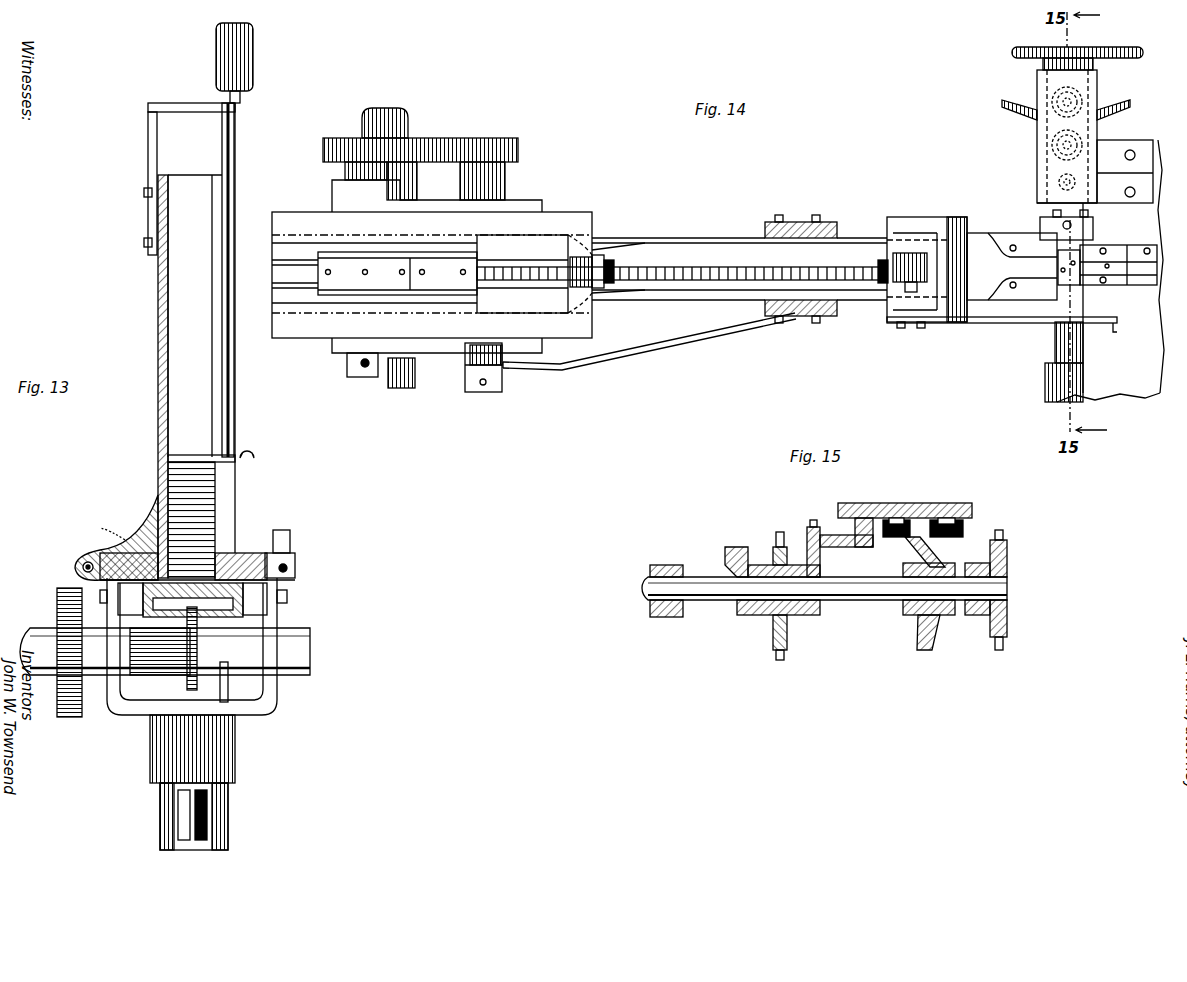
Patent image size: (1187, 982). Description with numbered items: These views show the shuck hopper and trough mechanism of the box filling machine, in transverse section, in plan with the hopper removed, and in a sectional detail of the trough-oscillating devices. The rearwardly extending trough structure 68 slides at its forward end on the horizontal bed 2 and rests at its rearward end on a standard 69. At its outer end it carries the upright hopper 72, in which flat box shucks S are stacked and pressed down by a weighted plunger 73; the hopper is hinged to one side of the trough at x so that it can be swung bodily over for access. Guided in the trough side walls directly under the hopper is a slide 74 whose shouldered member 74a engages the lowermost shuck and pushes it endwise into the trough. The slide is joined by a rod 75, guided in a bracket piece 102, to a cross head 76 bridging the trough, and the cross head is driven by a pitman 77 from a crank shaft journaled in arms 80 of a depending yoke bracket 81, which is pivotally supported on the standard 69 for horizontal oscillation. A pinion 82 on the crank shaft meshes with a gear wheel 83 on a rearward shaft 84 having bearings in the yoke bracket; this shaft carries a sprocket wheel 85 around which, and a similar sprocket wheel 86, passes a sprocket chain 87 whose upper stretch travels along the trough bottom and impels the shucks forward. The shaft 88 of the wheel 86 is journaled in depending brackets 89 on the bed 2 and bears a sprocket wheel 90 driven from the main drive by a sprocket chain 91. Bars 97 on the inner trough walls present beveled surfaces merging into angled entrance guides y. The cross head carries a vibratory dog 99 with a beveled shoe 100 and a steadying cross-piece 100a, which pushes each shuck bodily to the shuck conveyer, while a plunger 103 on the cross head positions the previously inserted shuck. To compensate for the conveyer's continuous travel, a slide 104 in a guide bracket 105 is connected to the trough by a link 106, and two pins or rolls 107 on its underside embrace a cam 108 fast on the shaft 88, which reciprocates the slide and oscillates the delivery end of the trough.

In FIG. 14, the bed 2 is at (1147, 378).
In FIG. 13, the trough structure 68 is at (173, 603).
In FIG. 14, the trough structure 68 is at (523, 197).
In FIG. 15, the trough structure 68 is at (742, 545).
In FIG. 13, the standard 69 is at (227, 820).
In FIG. 13, the hopper 72 is at (158, 287).
In FIG. 13, the weighted plunger 73 is at (190, 455).
In FIG. 13, the slide 74 is at (217, 577).
In FIG. 14, the slide 74 is at (303, 227).
In FIG. 13, the shouldered member 74a is at (200, 577).
In FIG. 14, the shouldered member 74a is at (360, 290).
In FIG. 14, the rod 75 is at (625, 268).
In FIG. 14, the cross head 76 is at (897, 312).
In FIG. 14, the pitman 77 is at (663, 347).
In FIG. 13, the arms 80 is at (227, 682).
In FIG. 13, the yoke bracket 81 is at (277, 622).
In FIG. 14, the pinion 82 is at (518, 148).
In FIG. 13, the gear wheel 83 is at (60, 600).
In FIG. 14, the gear wheel 83 is at (345, 140).
In FIG. 13, the rearward shaft 84 is at (310, 643).
In FIG. 13, the sprocket wheel 85 is at (190, 677).
In FIG. 15, the sprocket wheel 86 is at (788, 630).
In FIG. 14, the sprocket chain 87 is at (732, 268).
In FIG. 14, the shaft 88 is at (1060, 340).
In FIG. 15, the shaft 88 is at (715, 600).
In FIG. 14, the depending brackets 89 is at (1047, 397).
In FIG. 15, the depending brackets 89 is at (822, 610).
In FIG. 14, the sprocket wheel 90 is at (1103, 47).
In FIG. 15, the sprocket wheel 90 is at (1005, 548).
In FIG. 14, the sprocket chain 91 is at (1013, 52).
In FIG. 14, the bars 97 is at (712, 250).
In FIG. 14, the vibratory dog 99 is at (1033, 265).
In FIG. 14, the beveled shoe 100 is at (1107, 278).
In FIG. 14, the cross-piece 100a is at (1073, 268).
In FIG. 14, the bracket piece 102 is at (798, 317).
In FIG. 14, the plunger 103 is at (977, 323).
In FIG. 14, the slide 104 is at (1043, 135).
In FIG. 15, the slide 104 is at (850, 507).
In FIG. 14, the guide bracket 105 is at (1097, 88).
In FIG. 15, the guide bracket 105 is at (938, 503).
In FIG. 14, the link 106 is at (1060, 210).
In FIG. 15, the link 106 is at (840, 533).
In FIG. 14, the pins or rolls 107 is at (1097, 137).
In FIG. 15, the pins or rolls 107 is at (967, 527).
In FIG. 14, the cam 108 is at (1002, 108).
In FIG. 15, the cam 108 is at (930, 647).
In FIG. 13, the box shuck S is at (208, 487).
In FIG. 13, the hinge x is at (77, 560).
In FIG. 14, the entrance guides y is at (638, 247).